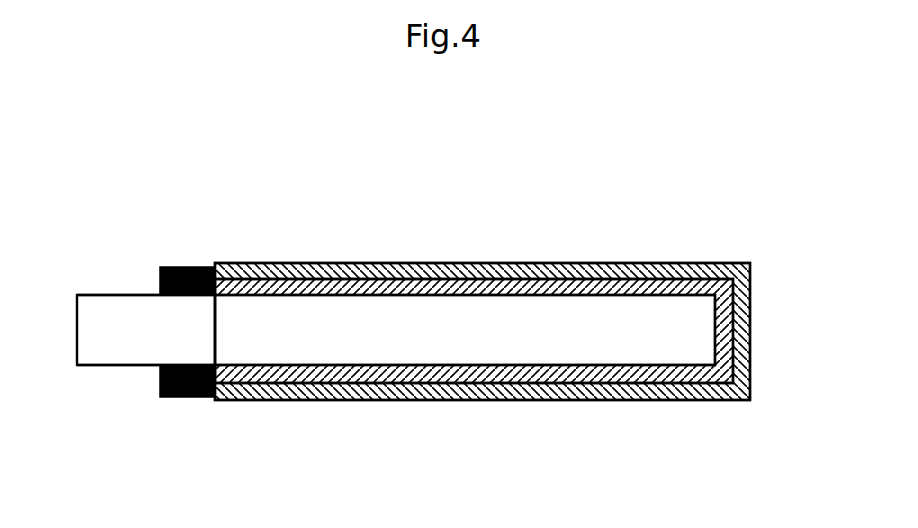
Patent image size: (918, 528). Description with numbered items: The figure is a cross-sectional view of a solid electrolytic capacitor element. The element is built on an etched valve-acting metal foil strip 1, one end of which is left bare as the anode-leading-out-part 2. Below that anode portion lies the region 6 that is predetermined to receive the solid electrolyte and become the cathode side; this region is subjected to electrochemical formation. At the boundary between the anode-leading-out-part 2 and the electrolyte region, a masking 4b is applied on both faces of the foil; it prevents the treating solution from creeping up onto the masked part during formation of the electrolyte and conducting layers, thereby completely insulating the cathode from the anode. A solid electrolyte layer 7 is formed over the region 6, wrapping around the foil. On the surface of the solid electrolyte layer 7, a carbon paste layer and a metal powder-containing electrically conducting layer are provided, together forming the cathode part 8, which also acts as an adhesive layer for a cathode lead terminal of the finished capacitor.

The substrate 1 is at (125, 343).
The anode-leading-out-part 2 is at (123, 265).
The masking 4b is at (187, 267).
The region predetermined to have a solid electrolyte formed thereon 6 is at (273, 282).
The solid electrolyte layer 7 is at (381, 270).
The cathode part 8 is at (606, 245).